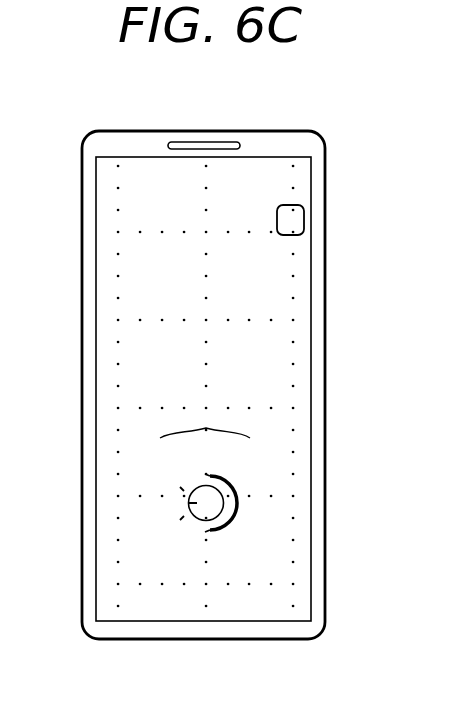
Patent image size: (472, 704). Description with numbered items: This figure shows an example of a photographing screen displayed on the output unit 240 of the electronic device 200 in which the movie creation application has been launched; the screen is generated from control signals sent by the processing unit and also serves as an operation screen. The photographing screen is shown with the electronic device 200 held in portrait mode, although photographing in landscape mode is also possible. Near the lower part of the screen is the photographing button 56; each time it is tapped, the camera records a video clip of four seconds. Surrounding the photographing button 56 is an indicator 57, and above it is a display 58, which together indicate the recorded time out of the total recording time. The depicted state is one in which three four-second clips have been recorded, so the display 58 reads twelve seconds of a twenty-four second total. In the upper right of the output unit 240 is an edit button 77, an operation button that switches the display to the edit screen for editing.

The electronic device 200 is at (265, 130).
The output unit 240 is at (305, 188).
The edit button 77 is at (295, 219).
The display 58 is at (206, 428).
The photographing button 56 is at (195, 502).
The indicator 57 is at (233, 503).